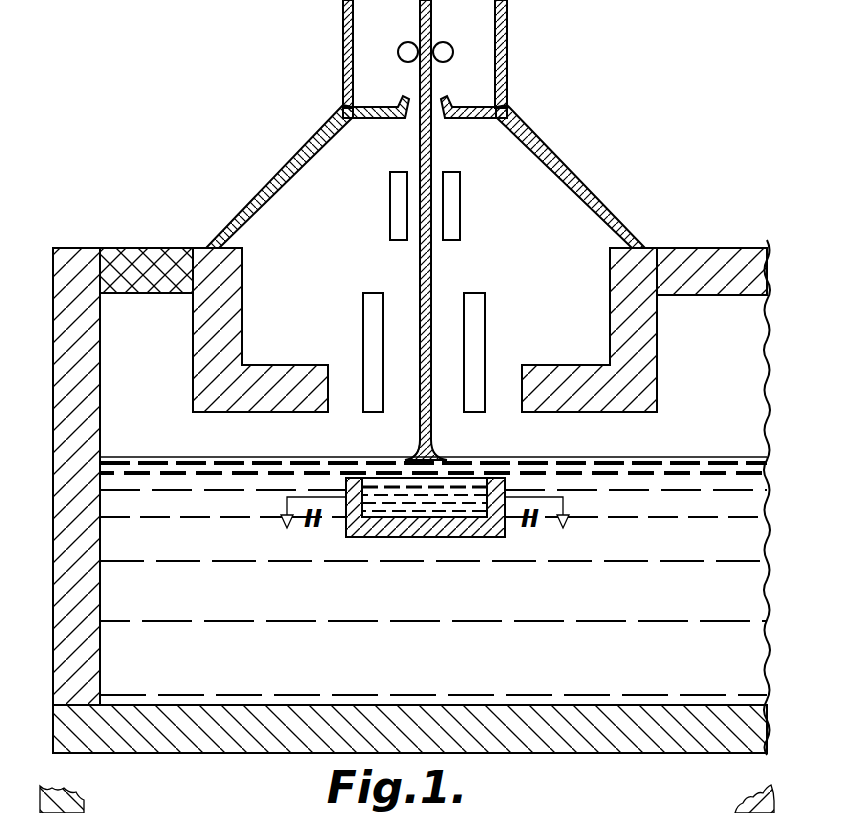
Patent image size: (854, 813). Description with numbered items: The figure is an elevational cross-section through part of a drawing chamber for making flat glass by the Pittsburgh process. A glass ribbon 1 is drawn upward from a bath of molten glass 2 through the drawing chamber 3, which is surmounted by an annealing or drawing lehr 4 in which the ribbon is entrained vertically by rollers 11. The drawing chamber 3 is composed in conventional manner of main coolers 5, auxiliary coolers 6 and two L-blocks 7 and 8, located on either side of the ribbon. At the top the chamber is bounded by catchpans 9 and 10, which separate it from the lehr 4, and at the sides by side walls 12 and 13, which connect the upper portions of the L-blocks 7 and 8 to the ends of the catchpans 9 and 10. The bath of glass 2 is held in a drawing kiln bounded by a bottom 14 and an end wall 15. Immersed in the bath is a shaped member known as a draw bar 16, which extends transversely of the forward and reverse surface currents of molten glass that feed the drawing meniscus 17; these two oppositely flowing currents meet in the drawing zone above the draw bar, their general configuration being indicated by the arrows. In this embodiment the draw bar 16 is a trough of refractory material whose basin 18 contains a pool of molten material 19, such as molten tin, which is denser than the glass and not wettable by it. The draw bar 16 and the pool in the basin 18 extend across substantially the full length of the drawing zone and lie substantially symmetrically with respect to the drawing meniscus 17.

The glass ribbon 1 is at (432, 280).
The bath of molten glass 2 is at (578, 611).
The drawing chamber 3 is at (526, 262).
The annealing or drawing lehr 4 is at (452, 25).
The main coolers 5 is at (375, 325).
The auxiliary coolers 6 is at (400, 206).
The L-block 7 is at (220, 336).
The L-block 8 is at (615, 330).
The catchpan 9 is at (379, 118).
The catchpan 10 is at (470, 118).
The rollers 11 is at (398, 55).
The side wall 12 is at (290, 170).
The side wall 13 is at (537, 133).
The bottom 14 is at (565, 740).
The end wall 15 is at (60, 370).
The draw bar 16 is at (445, 530).
The drawing meniscus 17 is at (416, 456).
The basin 18 is at (483, 510).
The pool of molten material 19 is at (400, 500).